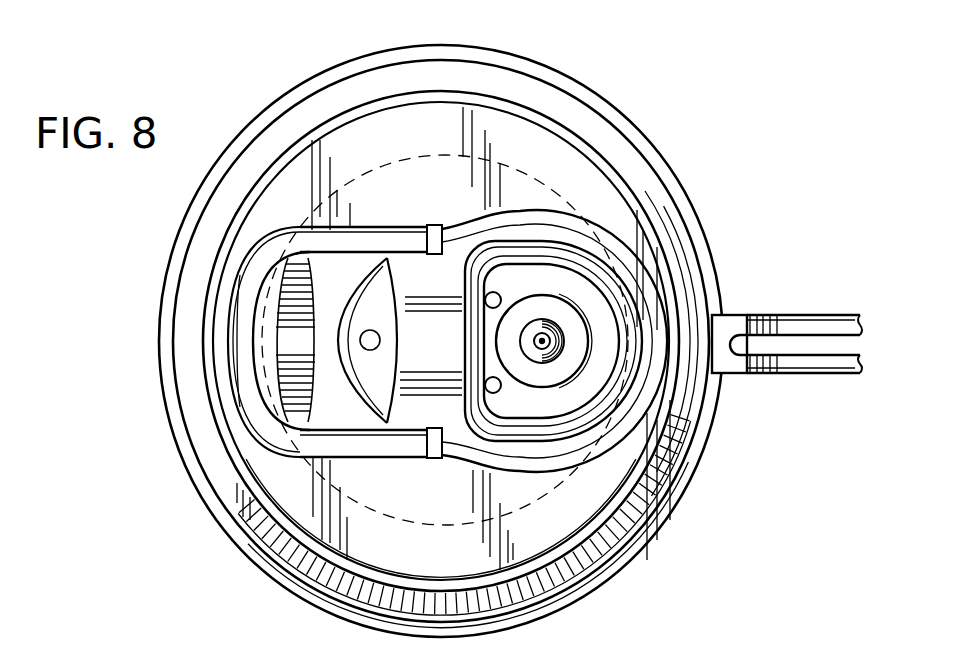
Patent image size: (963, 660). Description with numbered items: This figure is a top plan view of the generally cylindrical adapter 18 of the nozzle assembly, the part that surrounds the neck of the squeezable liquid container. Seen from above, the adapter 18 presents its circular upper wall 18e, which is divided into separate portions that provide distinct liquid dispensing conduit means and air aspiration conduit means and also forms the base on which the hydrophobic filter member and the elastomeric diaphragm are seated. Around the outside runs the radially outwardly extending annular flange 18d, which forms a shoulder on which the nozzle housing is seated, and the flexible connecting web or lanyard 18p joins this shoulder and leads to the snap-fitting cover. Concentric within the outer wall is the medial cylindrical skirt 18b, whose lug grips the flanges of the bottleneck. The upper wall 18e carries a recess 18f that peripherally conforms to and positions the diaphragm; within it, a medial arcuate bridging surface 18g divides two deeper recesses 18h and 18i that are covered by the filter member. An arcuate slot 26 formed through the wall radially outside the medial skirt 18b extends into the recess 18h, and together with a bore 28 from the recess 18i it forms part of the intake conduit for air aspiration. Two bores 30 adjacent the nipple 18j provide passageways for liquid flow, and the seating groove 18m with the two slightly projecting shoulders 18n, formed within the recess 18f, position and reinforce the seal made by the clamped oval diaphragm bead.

The adapter 18 is at (738, 217).
The medial cylindrical skirt 18b is at (314, 471).
The annular flange 18d is at (642, 145).
The upper wall 18e is at (366, 143).
The recess 18f is at (522, 210).
The medial arcuate bridging surface 18g is at (337, 287).
The deeper recess 18h is at (302, 312).
The deeper recess 18i is at (374, 300).
The nipple 18j is at (555, 358).
The seating groove 18m is at (574, 246).
The projecting shoulders 18n is at (437, 254).
The connecting web or lanyard 18p is at (757, 376).
The arcuate slot 26 is at (257, 355).
The bore 28 is at (380, 352).
The bores 30 is at (500, 299).